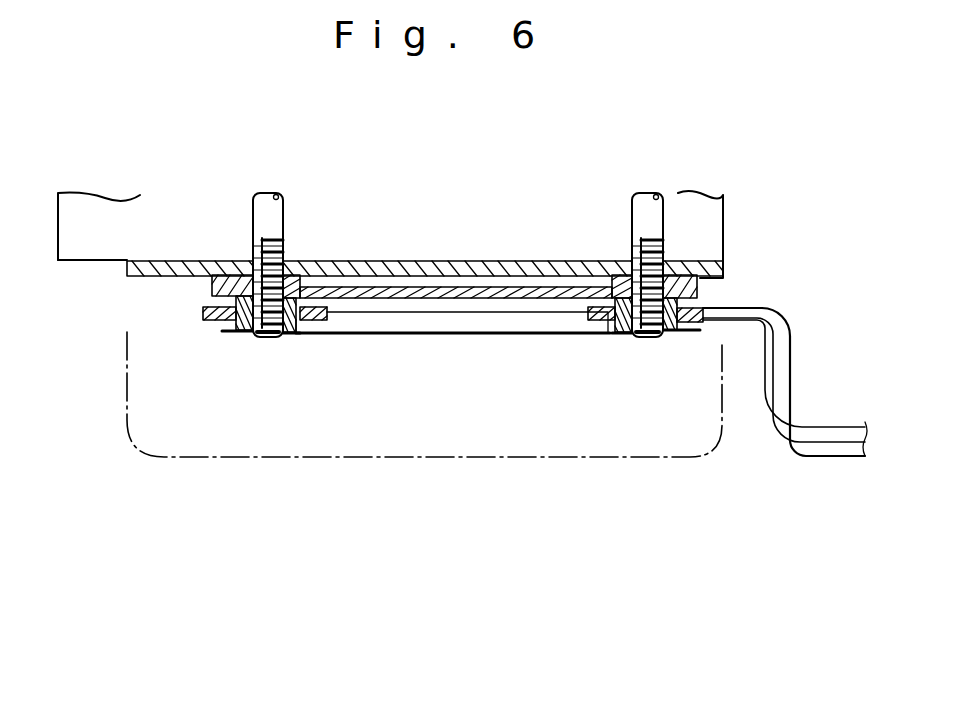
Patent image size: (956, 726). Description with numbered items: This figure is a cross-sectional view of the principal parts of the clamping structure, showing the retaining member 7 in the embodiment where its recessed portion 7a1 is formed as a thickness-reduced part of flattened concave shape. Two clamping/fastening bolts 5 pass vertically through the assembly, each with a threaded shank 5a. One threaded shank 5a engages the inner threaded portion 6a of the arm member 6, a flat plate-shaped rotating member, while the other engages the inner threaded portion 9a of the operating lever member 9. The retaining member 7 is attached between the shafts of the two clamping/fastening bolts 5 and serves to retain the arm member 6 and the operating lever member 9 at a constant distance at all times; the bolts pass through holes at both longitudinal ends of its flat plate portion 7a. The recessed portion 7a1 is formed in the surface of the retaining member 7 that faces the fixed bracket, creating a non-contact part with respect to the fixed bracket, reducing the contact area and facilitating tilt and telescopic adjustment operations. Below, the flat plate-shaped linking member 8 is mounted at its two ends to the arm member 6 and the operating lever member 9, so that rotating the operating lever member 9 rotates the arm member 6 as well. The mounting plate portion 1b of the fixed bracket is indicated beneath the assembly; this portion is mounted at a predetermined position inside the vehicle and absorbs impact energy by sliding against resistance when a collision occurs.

The mounting plate portion 1b is at (377, 458).
The clamping/fastening bolt 5 is at (264, 337).
The threaded shank 5a is at (253, 250).
The arm member 6 is at (205, 310).
The inner threaded portion 6a is at (232, 332).
The retaining member 7 is at (478, 274).
The flat plate portion 7a is at (403, 300).
The recessed portion 7a1 is at (383, 290).
The linking member 8 is at (476, 346).
The operating lever member 9 is at (794, 390).
The inner threaded portion 9a is at (675, 330).